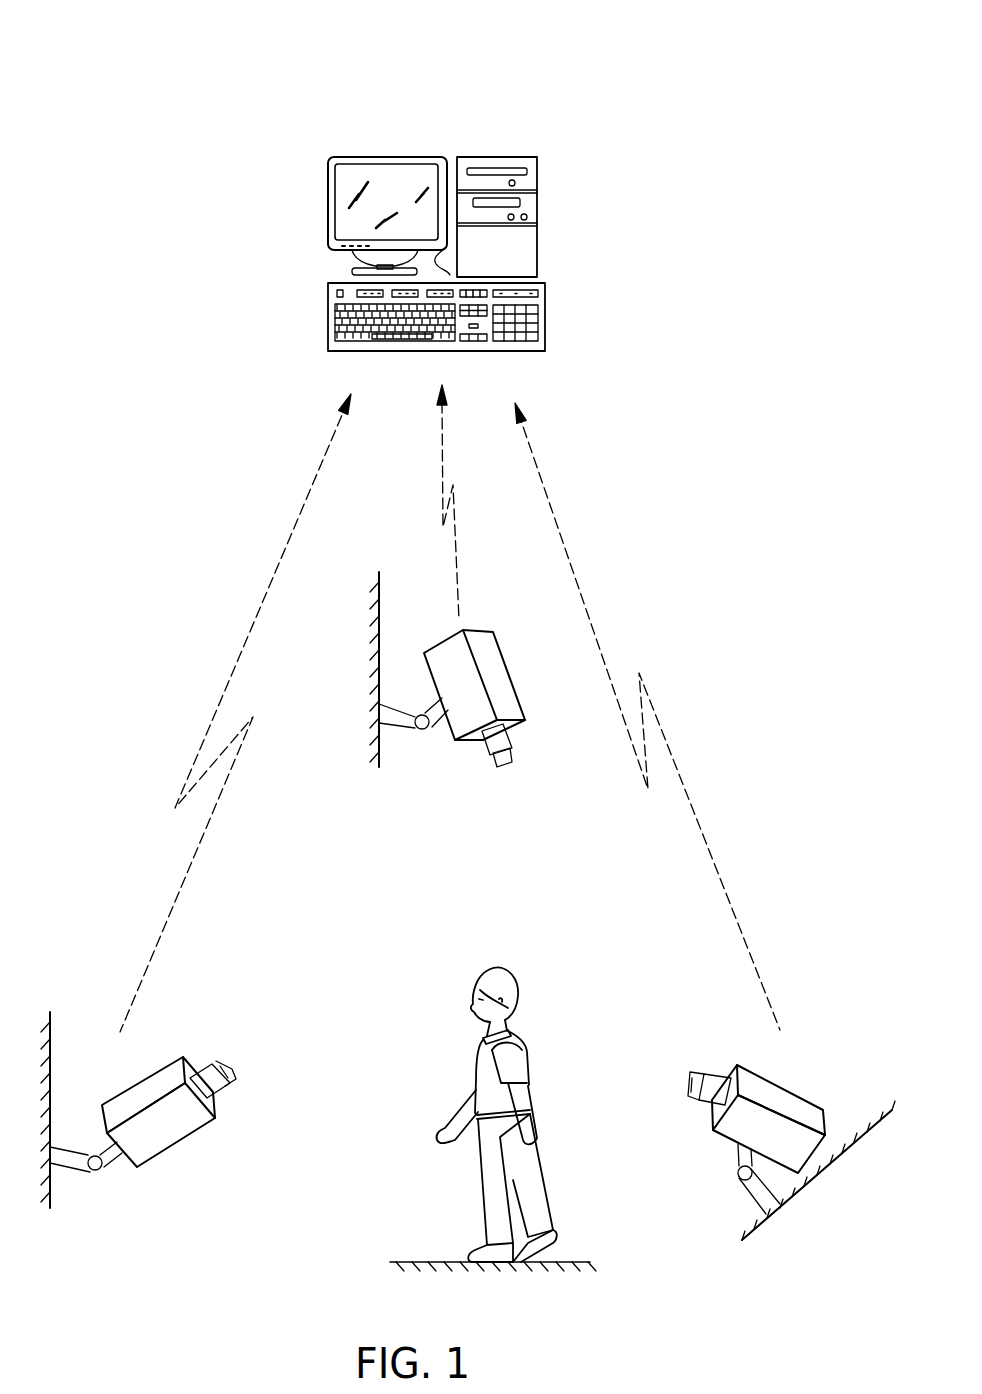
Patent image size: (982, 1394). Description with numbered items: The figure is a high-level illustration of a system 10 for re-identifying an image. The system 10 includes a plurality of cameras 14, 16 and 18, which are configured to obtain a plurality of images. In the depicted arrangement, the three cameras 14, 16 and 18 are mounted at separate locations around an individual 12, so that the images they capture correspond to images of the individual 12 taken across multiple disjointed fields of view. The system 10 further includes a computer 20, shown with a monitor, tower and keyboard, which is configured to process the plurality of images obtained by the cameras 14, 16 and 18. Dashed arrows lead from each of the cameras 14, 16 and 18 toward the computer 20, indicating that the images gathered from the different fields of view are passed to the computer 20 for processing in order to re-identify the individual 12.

The system 10 is at (642, 65).
The individual 12 is at (532, 1103).
The camera 14 is at (177, 1140).
The camera 16 is at (482, 747).
The camera 18 is at (805, 1088).
The computer 20 is at (537, 251).